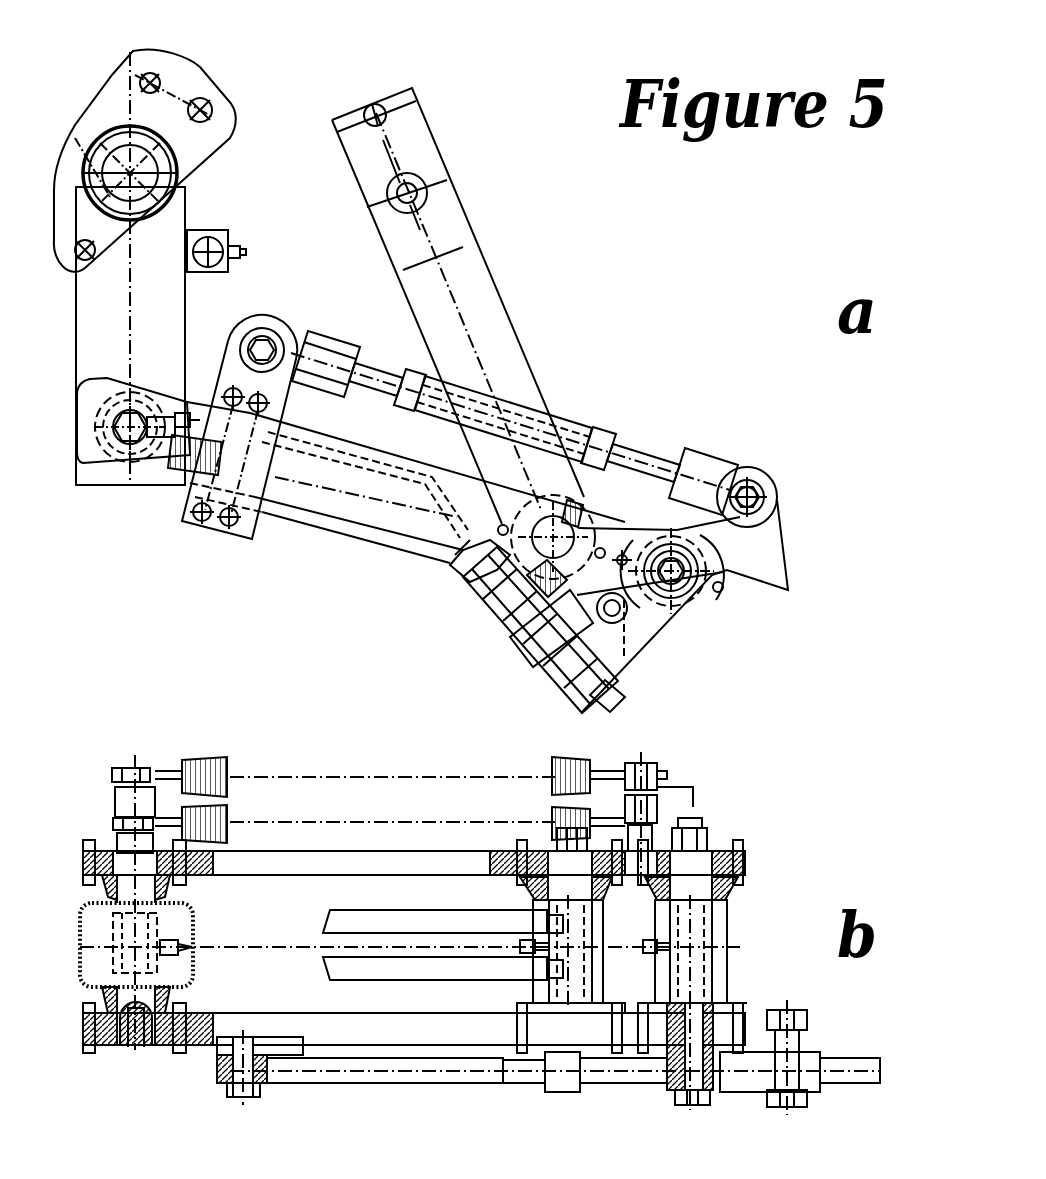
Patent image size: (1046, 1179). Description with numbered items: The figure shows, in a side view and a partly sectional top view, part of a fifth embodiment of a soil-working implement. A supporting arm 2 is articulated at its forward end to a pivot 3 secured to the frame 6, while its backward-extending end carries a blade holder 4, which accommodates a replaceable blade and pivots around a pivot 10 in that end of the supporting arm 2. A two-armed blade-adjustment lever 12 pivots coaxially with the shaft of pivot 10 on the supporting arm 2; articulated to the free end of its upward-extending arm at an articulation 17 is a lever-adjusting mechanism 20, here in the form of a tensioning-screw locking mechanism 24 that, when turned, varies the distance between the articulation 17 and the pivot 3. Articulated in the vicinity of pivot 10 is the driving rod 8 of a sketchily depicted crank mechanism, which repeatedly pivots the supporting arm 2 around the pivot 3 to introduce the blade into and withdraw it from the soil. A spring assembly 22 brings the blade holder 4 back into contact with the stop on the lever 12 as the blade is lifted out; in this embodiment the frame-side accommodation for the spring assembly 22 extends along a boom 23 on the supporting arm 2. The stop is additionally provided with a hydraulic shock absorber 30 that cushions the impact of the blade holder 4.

In FIG. 5b, the supporting arm 2 is at (288, 865).
In FIG. 5a, the pivot 3 is at (112, 447).
In FIG. 5b, the pivot 3 is at (140, 890).
In FIG. 5a, the blade holder 4 is at (638, 628).
In FIG. 5b, the blade holder 4 is at (667, 811).
In FIG. 5a, the frame 6 is at (160, 302).
In FIG. 5b, the frame 6 is at (190, 925).
In FIG. 5a, the driving rod 8 is at (477, 297).
In FIG. 5a, the pivot 10 is at (697, 603).
In FIG. 5a, the blade-adjustment lever 12 is at (725, 572).
In FIG. 5a, the articulation 17 is at (748, 487).
In FIG. 5a, the lever-adjusting mechanism 20 is at (652, 412).
In FIG. 5b, the spring assembly 22 is at (227, 802).
In FIG. 5a, the boom 23 is at (232, 373).
In FIG. 5a, the tensioning-screw locking mechanism 24 is at (575, 428).
In FIG. 5b, the tensioning-screw locking mechanism 24 is at (440, 1082).
In FIG. 5a, the shock absorber 30 is at (488, 595).